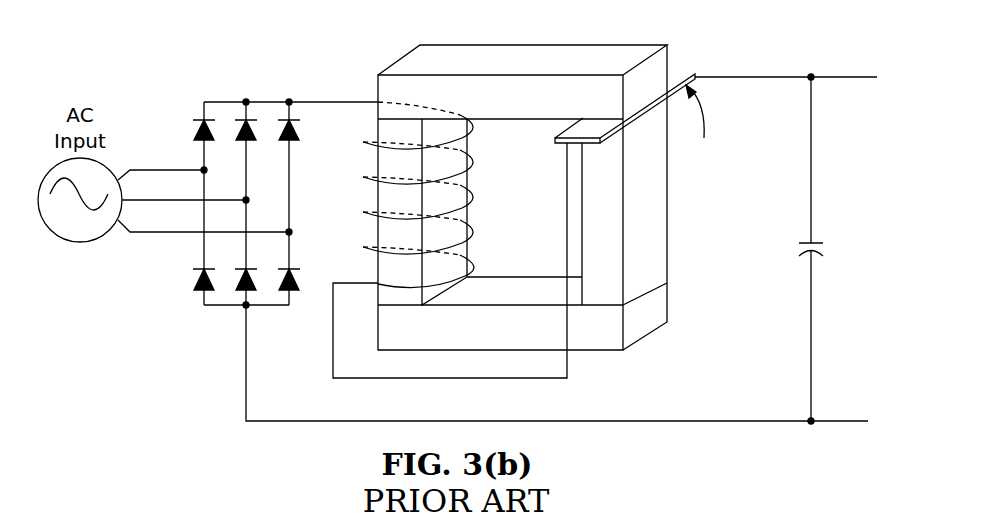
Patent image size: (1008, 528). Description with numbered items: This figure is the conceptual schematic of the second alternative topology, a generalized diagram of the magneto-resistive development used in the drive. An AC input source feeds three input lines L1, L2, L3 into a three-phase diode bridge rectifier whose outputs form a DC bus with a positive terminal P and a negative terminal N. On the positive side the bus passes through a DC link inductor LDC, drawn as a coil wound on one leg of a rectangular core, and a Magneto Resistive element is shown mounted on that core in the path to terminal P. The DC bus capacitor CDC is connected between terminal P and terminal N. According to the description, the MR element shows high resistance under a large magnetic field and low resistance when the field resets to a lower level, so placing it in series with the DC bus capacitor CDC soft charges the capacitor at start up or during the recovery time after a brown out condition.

The first AC input line L1 is at (161, 164).
The second AC input line L2 is at (184, 190).
The third AC input line L3 is at (203, 221).
The DC link inductor with core, coil and magneto-resistive element LDC is at (551, 198).
The DC link capacitor CDC is at (792, 249).
The positive DC bus node P is at (786, 93).
The negative DC bus node N is at (557, 364).